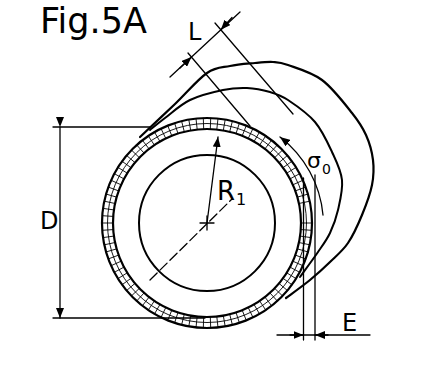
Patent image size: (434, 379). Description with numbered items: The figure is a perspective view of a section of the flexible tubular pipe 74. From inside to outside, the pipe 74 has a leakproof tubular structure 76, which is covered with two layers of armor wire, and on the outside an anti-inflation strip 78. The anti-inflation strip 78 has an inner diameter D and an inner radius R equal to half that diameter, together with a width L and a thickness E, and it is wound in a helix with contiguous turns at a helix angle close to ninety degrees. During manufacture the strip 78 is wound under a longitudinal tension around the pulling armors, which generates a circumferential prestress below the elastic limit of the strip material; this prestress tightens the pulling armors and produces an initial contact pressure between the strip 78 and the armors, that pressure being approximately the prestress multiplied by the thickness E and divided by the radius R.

The flexible tubular pipe 74 is at (133, 90).
The leakproof tubular structure 76 is at (289, 232).
The anti-inflation strip 78 is at (292, 188).